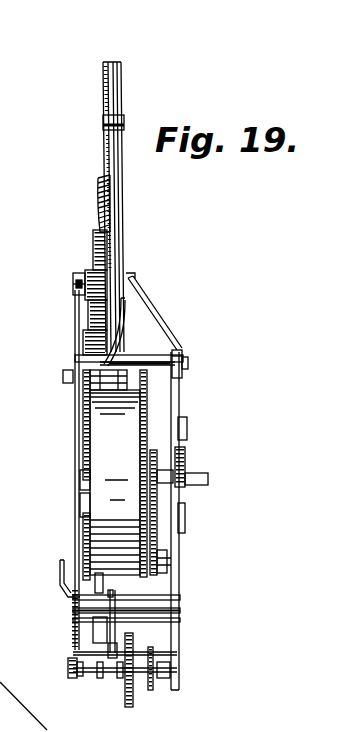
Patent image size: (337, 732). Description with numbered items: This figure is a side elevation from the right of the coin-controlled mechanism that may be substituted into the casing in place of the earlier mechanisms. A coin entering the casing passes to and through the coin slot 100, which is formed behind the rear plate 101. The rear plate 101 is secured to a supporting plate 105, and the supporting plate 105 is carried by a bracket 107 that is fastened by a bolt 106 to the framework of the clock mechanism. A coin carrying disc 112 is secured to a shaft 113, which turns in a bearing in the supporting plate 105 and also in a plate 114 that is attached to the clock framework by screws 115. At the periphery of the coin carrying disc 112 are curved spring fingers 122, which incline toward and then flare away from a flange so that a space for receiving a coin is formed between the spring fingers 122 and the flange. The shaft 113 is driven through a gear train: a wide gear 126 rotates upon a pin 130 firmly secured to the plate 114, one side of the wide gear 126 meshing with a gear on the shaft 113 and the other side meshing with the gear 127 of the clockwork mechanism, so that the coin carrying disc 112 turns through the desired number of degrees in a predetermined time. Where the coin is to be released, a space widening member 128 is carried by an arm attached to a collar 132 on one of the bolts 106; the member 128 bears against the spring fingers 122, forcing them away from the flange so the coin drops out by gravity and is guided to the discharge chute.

The coin slot 100 is at (47, 727).
The rear plate 101 is at (120, 63).
The supporting plate 105 is at (124, 114).
The bolt 106 is at (186, 369).
The bracket 107 is at (172, 332).
The coin carrying disc 112 is at (98, 188).
The shaft 113 is at (75, 284).
The plate 114 is at (75, 288).
The screws 115 is at (67, 378).
The spring fingers 122 is at (100, 212).
The wide gear 126 is at (73, 338).
The gear 127 is at (85, 420).
The space widening member 128 is at (122, 317).
The pin 130 is at (62, 372).
The collar 132 is at (125, 360).